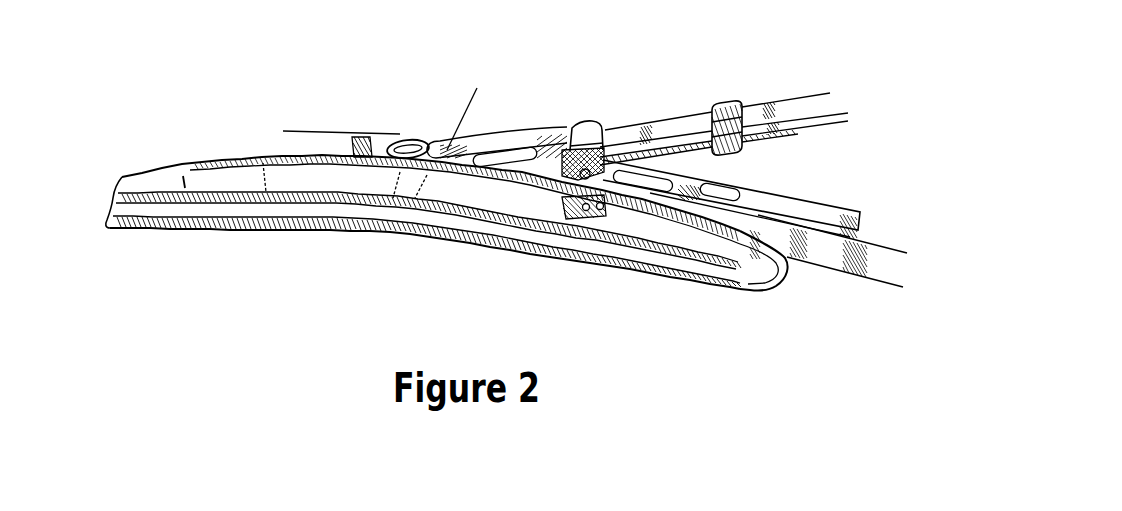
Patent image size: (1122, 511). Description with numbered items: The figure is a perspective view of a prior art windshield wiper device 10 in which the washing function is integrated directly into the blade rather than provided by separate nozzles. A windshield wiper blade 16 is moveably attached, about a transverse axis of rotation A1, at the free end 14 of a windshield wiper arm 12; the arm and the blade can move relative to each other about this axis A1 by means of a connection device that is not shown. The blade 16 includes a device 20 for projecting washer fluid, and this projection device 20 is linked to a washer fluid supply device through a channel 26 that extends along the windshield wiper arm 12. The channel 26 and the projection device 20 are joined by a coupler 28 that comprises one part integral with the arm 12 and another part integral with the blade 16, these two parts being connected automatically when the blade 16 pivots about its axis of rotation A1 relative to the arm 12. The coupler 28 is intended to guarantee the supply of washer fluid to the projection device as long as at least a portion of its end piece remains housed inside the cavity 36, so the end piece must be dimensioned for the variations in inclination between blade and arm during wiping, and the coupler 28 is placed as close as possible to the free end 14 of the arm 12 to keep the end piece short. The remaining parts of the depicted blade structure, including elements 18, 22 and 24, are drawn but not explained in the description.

The wiper blade assembly 10 is at (345, 118).
The windshield wiper arm 12 is at (763, 106).
The free end of arm 14 is at (508, 144).
The windshield wiper blade 16 is at (750, 180).
The lower member 18 is at (812, 207).
The device for projecting washer fluid 20 is at (270, 170).
The pivot pin 22 is at (628, 206).
The pivot pin 24 is at (646, 208).
The channel 26 is at (669, 143).
The coupler 28 is at (594, 118).
The cavity 36 is at (567, 203).
The transverse axis of rotation A1 is at (455, 127).